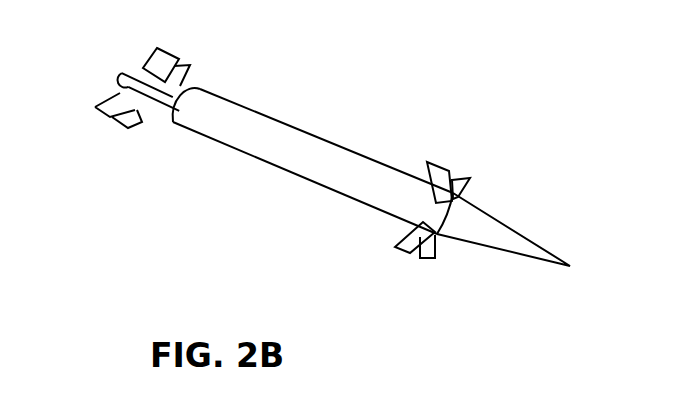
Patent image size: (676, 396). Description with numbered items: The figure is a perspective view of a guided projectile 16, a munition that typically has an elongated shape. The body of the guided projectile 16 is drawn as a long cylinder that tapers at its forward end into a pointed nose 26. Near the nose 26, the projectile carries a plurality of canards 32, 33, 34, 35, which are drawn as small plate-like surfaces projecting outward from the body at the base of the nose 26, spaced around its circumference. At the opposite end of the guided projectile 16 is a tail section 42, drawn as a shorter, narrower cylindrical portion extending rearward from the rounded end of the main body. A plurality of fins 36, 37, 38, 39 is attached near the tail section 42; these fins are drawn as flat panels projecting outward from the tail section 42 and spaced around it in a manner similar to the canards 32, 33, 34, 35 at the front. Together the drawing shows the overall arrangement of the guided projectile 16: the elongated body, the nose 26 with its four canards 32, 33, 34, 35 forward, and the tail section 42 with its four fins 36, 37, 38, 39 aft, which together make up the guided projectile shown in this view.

The guided projectile 16 is at (357, 151).
The nose 26 is at (497, 218).
The canard 32 is at (430, 162).
The canard 33 is at (468, 178).
The canard 34 is at (430, 260).
The canard 35 is at (395, 248).
The fin 36 is at (152, 53).
The fin 37 is at (183, 83).
The fin 38 is at (140, 110).
The fin 39 is at (105, 108).
The tail section 42 is at (117, 75).